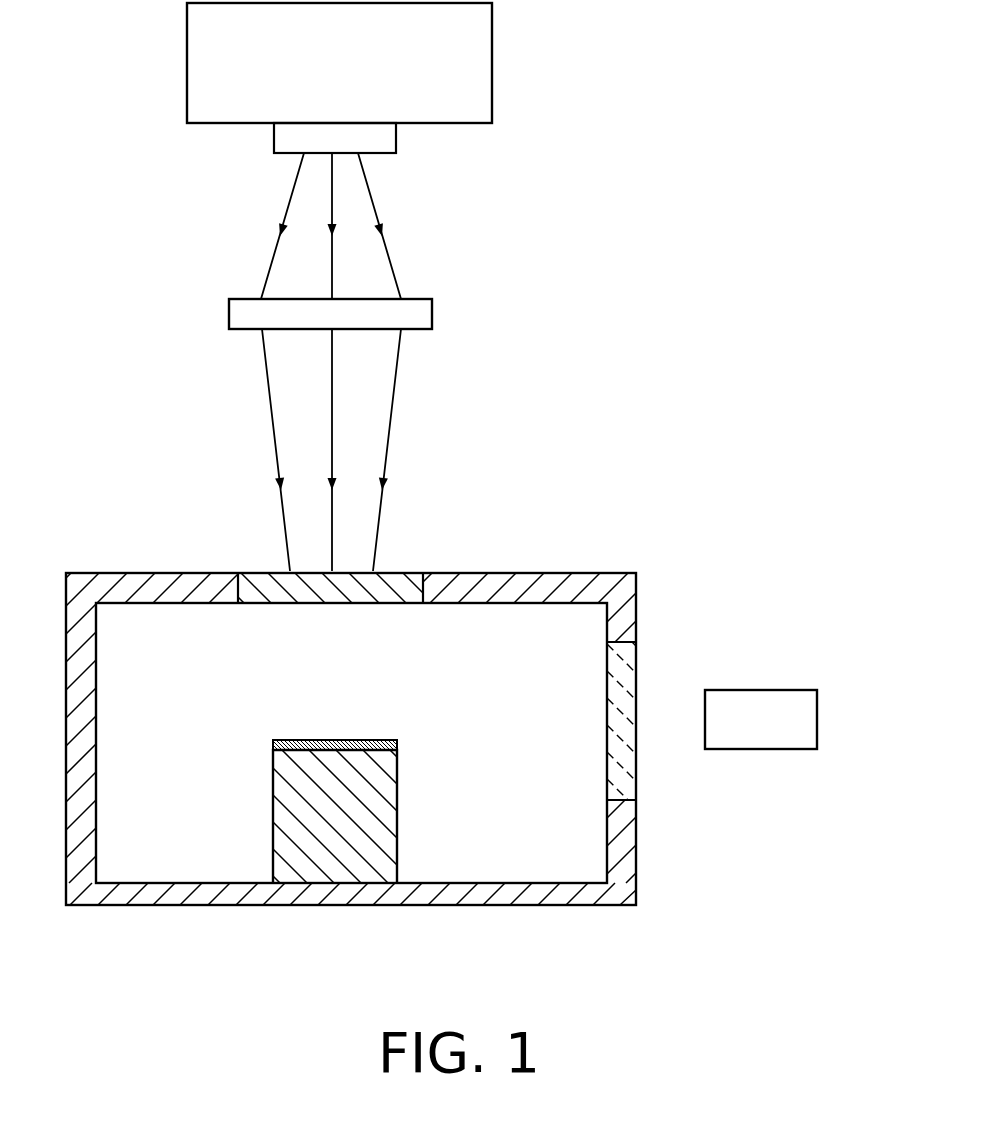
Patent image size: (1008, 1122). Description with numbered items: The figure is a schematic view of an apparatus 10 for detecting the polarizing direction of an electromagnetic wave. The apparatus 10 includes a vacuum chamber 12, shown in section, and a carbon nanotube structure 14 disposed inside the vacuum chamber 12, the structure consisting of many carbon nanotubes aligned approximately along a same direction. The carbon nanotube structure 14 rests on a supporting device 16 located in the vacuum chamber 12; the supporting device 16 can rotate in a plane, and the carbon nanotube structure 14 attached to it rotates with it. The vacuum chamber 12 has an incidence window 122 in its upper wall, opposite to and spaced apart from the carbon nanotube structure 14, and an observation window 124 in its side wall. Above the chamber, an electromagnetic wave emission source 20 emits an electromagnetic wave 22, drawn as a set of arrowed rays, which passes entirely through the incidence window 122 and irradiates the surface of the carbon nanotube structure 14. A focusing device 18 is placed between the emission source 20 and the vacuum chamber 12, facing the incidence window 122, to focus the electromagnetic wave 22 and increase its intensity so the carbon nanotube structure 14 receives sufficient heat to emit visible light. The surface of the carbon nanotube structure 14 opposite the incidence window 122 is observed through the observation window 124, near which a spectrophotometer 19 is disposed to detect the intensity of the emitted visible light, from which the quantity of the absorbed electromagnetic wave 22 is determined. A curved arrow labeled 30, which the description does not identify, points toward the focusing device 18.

The apparatus 10 is at (825, 272).
The vacuum chamber 12 is at (520, 587).
The incidence window 122 is at (413, 590).
The observation window 124 is at (613, 652).
The carbon nanotube structure 14 is at (386, 740).
The supporting device 16 is at (382, 793).
The focusing device 18 is at (425, 313).
The spectrophotometer 19 is at (723, 713).
The electromagnetic wave emission source 20 is at (478, 95).
The electromagnetic wave 22 is at (272, 445).
The light source module 30 is at (192, 319).